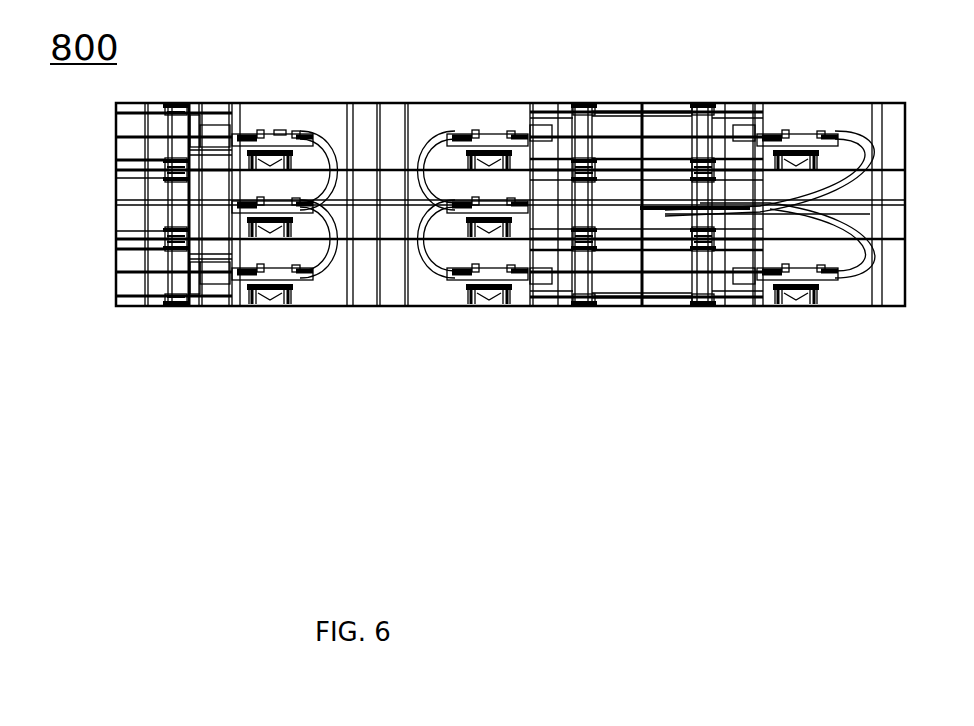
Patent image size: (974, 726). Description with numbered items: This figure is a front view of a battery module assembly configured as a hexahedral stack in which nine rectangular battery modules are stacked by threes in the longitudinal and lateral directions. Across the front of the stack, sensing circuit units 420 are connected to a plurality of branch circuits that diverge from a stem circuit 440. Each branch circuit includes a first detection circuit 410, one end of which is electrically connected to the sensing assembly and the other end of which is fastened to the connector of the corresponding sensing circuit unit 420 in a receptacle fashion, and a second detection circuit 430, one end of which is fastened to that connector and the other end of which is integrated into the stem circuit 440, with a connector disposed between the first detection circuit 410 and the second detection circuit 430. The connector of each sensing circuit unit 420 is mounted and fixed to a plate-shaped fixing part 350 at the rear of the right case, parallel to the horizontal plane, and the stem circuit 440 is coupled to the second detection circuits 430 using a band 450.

The first detection circuit 410 is at (238, 140).
The sensing circuit unit 420 is at (280, 120).
The second detection circuit 430 is at (332, 140).
The stem circuit 440 is at (141, 200).
The band 450 is at (313, 205).
The plate-shaped fixing part 350 is at (472, 158).